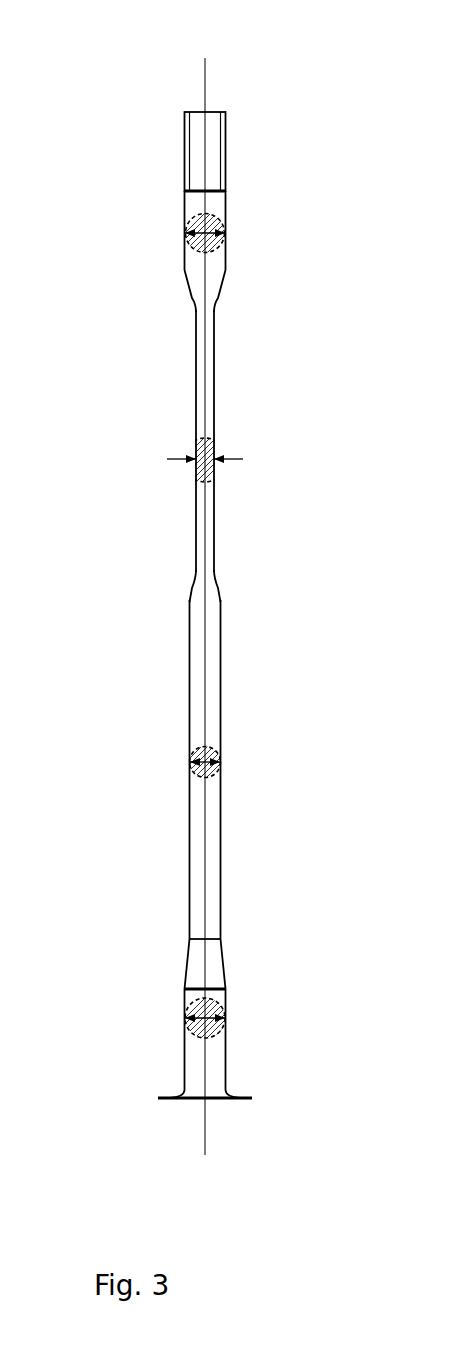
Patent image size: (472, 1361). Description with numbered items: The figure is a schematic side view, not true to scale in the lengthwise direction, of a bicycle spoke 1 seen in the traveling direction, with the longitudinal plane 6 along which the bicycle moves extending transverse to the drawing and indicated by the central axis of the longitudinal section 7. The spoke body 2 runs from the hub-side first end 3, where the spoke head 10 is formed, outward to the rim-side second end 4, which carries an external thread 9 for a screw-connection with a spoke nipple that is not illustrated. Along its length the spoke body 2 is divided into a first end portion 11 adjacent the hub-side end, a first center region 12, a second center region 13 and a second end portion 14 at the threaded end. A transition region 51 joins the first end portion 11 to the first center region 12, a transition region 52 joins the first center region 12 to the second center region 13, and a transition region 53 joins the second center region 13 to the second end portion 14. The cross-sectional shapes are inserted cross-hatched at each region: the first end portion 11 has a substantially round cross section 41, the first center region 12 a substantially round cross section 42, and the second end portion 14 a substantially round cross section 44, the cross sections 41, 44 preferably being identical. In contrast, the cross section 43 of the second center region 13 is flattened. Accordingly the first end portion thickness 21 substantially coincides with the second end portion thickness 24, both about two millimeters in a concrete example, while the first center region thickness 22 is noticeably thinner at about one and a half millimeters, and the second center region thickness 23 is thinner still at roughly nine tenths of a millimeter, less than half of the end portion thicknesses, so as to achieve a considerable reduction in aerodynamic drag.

The spoke 1 is at (145, 97).
The spoke body 2 is at (184, 1077).
The hub-side first end 3 is at (150, 1112).
The rim-side second end 4 is at (155, 143).
The longitudinal plane 6 is at (205, 82).
The longitudinal section 7 is at (120, 376).
The thread 9 is at (226, 150).
The spoke head 10 is at (228, 1083).
The first end portion 11 is at (152, 1025).
The first center region 12 is at (152, 763).
The second center region 13 is at (155, 434).
The second end portion 14 is at (155, 216).
The first end portion thickness 21 is at (222, 1007).
The first center region thickness 22 is at (216, 752).
The second center region thickness 23 is at (216, 448).
The second end portion thickness 24 is at (222, 218).
The cross section 41 is at (215, 1027).
The cross section 42 is at (216, 770).
The cross section 43 is at (215, 476).
The cross section 44 is at (214, 246).
The transition region 51 is at (152, 955).
The transition region 52 is at (155, 578).
The transition region 53 is at (155, 296).